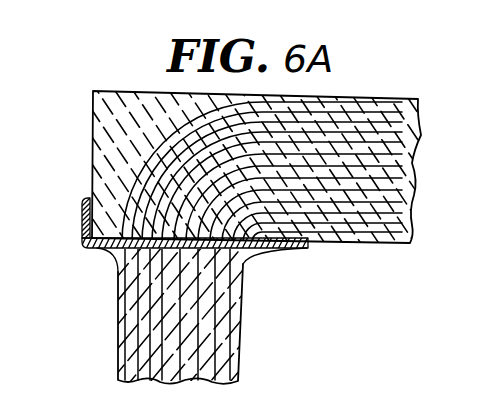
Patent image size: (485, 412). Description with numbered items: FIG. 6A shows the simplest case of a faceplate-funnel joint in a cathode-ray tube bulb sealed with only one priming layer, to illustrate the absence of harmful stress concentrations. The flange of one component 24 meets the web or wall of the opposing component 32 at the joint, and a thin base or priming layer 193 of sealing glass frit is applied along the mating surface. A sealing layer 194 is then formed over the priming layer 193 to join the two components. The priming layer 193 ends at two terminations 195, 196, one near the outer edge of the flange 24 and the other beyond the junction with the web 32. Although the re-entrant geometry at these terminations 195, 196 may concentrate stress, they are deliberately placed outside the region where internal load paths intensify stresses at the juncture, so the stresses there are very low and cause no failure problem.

The composite flange / rim body 24 is at (93, 104).
The web / stem portion 32 is at (118, 324).
The priming layer 193 is at (82, 214).
The sealing layer 194 is at (137, 255).
The termination of the priming layer 195 is at (87, 198).
The termination of the priming layer 196 is at (307, 248).